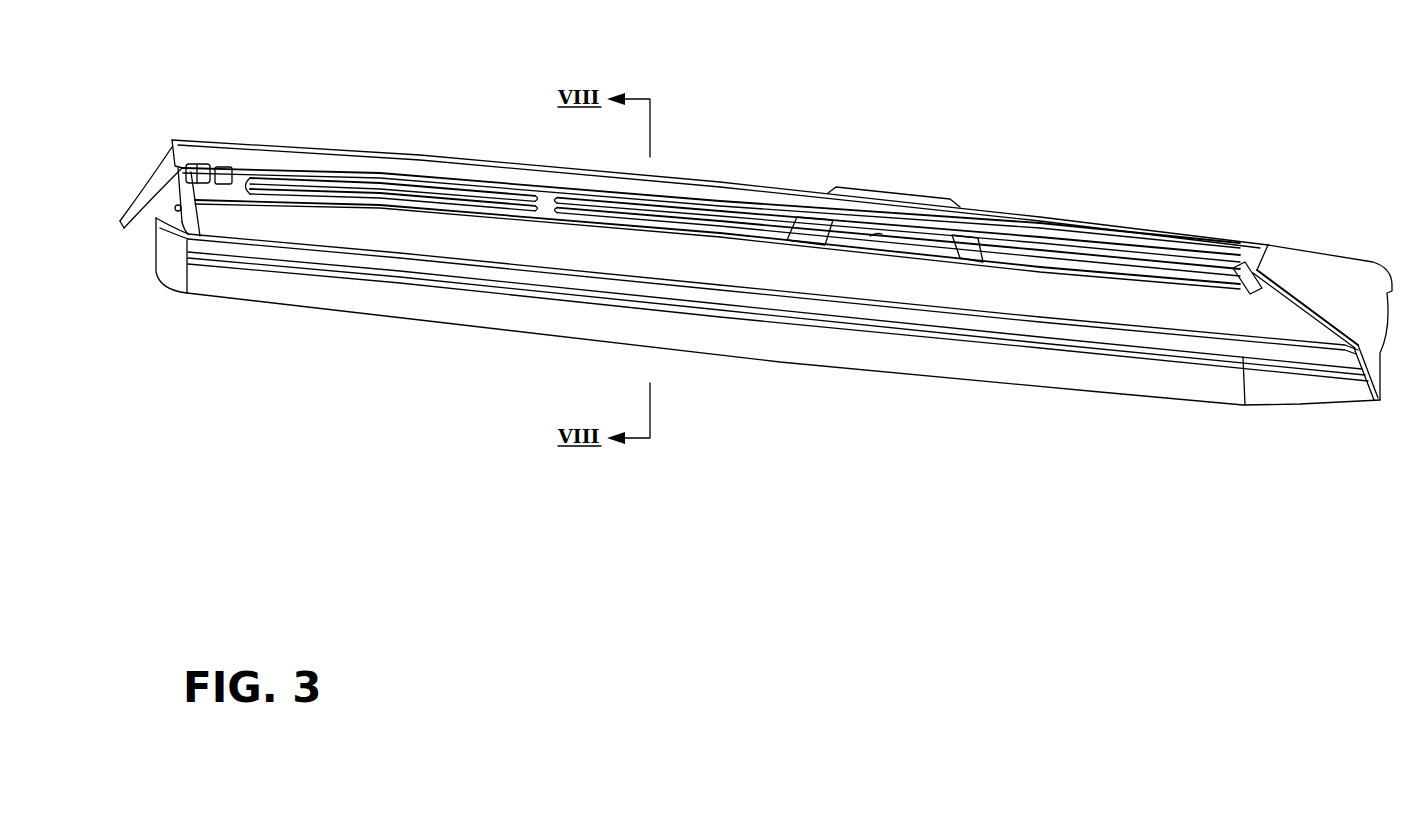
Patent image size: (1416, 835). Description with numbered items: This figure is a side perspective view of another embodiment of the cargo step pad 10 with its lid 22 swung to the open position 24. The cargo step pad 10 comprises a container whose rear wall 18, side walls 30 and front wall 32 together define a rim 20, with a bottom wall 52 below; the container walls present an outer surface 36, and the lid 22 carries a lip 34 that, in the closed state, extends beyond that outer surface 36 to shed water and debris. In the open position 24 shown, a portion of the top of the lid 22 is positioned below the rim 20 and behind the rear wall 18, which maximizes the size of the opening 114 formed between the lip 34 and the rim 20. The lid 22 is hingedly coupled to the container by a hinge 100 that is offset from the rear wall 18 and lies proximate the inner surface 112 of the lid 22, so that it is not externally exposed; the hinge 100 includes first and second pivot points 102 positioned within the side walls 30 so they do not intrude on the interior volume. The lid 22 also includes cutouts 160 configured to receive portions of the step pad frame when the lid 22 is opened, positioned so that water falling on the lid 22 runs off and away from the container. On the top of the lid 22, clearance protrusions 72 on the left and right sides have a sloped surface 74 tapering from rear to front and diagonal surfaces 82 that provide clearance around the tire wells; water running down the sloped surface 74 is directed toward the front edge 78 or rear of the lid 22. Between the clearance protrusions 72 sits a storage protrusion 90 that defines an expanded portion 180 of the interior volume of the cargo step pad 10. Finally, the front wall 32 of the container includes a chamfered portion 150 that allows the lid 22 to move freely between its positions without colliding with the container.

The cargo step pad 10 is at (750, 490).
The rear wall 18 is at (562, 237).
The rim 20 is at (388, 268).
The lid 22 is at (1159, 212).
The open position 24 is at (1250, 430).
The side walls 30 is at (1325, 383).
The front wall 32 is at (970, 360).
The lip 34 is at (397, 170).
The outer surface 36 is at (732, 346).
The bottom wall 52 is at (873, 312).
The clearance protrusions 72 is at (1371, 240).
The sloped surface 74 is at (1323, 247).
The front edge 78 is at (710, 180).
The diagonal surfaces 82 is at (1339, 300).
The storage protrusion 90 is at (907, 192).
The hinge 100 is at (172, 140).
The pivot points 102 is at (156, 272).
The inner surface 112 is at (247, 167).
The opening 114 is at (1047, 240).
The chamfered portion 150 is at (1155, 347).
The cutouts 160 is at (157, 180).
The expanded portion 180 is at (883, 232).